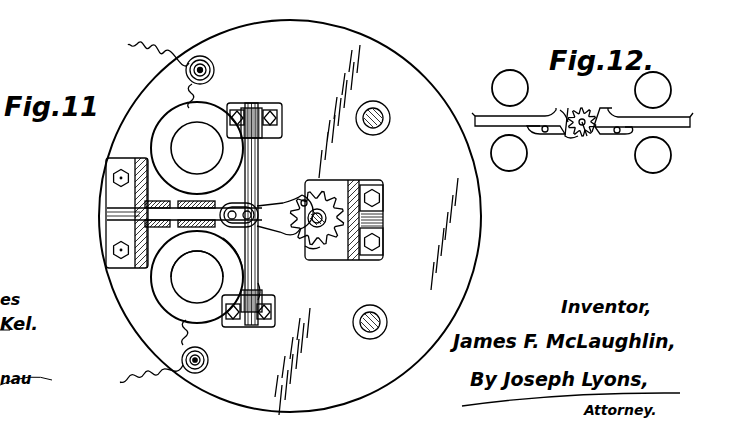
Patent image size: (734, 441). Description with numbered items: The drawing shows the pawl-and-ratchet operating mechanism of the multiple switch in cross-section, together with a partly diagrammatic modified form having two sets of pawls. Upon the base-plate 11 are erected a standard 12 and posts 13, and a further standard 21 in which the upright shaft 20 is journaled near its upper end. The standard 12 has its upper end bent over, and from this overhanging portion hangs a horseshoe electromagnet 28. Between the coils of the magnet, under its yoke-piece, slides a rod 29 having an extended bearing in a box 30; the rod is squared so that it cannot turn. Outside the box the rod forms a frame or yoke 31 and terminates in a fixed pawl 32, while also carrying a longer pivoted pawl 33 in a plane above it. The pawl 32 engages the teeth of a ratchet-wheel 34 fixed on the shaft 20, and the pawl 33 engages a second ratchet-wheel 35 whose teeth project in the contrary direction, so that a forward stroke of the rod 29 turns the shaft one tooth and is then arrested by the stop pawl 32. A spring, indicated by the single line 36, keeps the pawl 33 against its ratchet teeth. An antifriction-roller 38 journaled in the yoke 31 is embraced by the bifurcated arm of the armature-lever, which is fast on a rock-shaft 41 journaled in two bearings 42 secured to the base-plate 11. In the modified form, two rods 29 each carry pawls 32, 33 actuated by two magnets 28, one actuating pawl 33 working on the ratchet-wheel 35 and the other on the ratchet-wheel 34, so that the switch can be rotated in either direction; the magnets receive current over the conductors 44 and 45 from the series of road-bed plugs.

In FIG. 11, the base-plate 11 is at (290, 217).
In FIG. 11, the standard 12 is at (116, 200).
In FIG. 11, the posts 13 is at (391, 120).
In FIG. 12, the upright shaft 20 is at (580, 118).
In FIG. 11, the standard 21 is at (384, 222).
In FIG. 11, the electromagnet 28 is at (197, 213).
In FIG. 12, the electromagnet 28 is at (508, 85).
In FIG. 11, the sliding rod 29 is at (117, 226).
In FIG. 12, the sliding rod 29 is at (476, 118).
In FIG. 11, the box 30 is at (190, 258).
In FIG. 11, the frame or yoke 31 is at (258, 203).
In FIG. 11, the fixed pawl 32 is at (303, 203).
In FIG. 12, the fixed pawl 32 is at (598, 103).
In FIG. 11, the pivoted pawl 33 is at (288, 243).
In FIG. 12, the pivoted pawl 33 is at (582, 138).
In FIG. 11, the ratchet-wheel 34 is at (318, 196).
In FIG. 12, the ratchet-wheel 34 is at (600, 134).
In FIG. 11, the ratchet-wheel 35 is at (322, 247).
In FIG. 12, the ratchet-wheel 35 is at (560, 133).
In FIG. 11, the spring 36 is at (228, 257).
In FIG. 11, the antifriction-roller 38 is at (230, 214).
In FIG. 11, the rock-shaft 41 is at (260, 287).
In FIG. 11, the bearings 42 is at (254, 108).
In FIG. 11, the conductor 44 is at (162, 75).
In FIG. 11, the conductor 45 is at (149, 361).